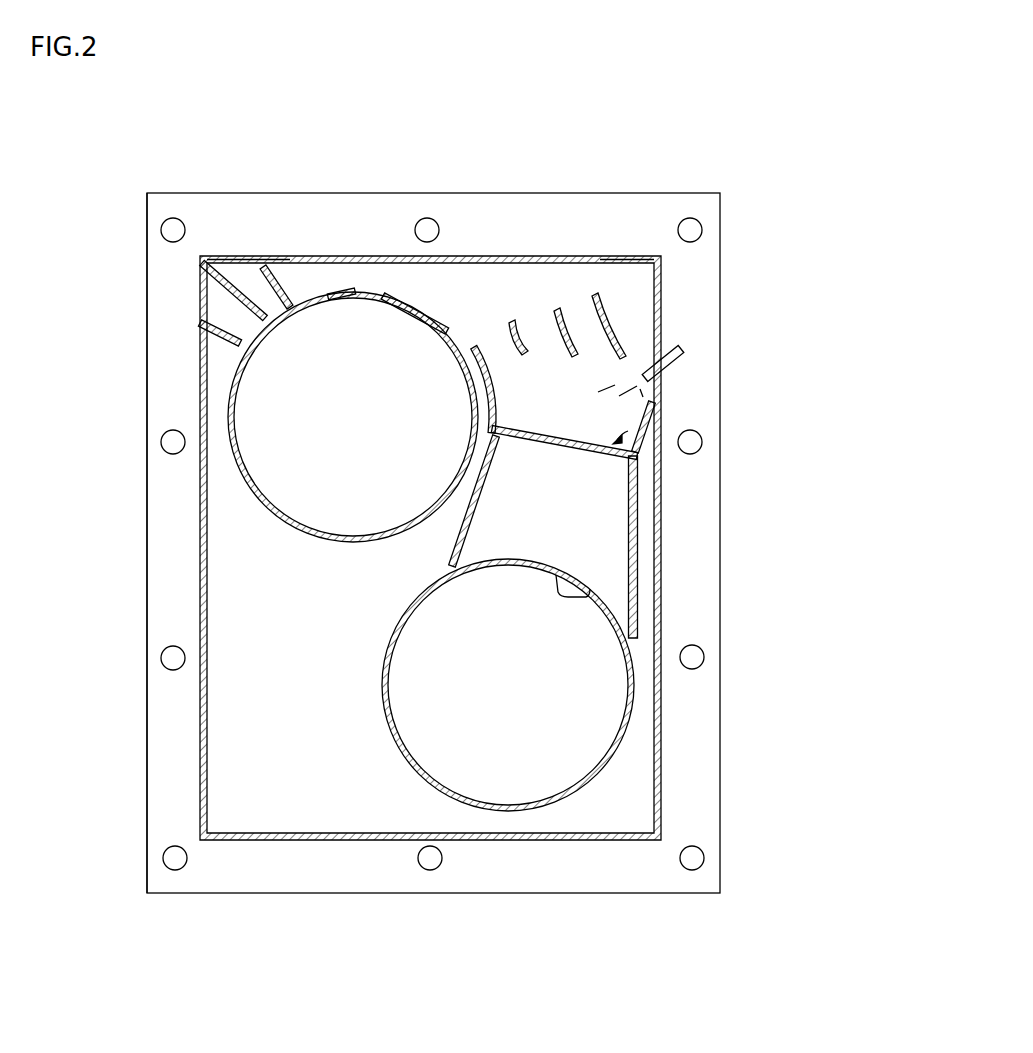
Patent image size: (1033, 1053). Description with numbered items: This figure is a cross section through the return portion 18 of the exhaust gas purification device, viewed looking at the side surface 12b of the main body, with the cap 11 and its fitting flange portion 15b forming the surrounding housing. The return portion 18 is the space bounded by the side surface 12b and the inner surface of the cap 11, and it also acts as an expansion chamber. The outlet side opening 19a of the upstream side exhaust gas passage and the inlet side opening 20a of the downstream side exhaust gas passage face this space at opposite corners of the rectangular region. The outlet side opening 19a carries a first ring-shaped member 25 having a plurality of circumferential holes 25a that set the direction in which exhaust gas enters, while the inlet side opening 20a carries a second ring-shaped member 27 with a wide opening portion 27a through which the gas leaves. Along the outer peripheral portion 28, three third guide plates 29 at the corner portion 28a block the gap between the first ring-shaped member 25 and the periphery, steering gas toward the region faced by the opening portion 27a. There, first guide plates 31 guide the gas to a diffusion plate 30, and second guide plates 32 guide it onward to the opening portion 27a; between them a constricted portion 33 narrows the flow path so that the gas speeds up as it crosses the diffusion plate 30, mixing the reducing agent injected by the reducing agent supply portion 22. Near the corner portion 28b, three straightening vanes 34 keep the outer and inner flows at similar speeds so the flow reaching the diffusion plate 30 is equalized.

The cap 11 is at (760, 229).
The side surface 12b is at (303, 755).
The fitting flange portion 15b is at (156, 585).
The return portion 18 is at (512, 272).
The outlet side opening 19a is at (323, 307).
The inlet side opening 20a is at (580, 597).
The reducing agent supply portion 22 is at (682, 352).
The first ring-shaped member 25 is at (228, 395).
The holes 25a is at (433, 317).
The second ring-shaped member 27 is at (635, 693).
The opening portion 27a is at (622, 637).
The outer peripheral portion 28 is at (202, 688).
The corner portion 28a is at (260, 273).
The corner portion 28b is at (642, 253).
The third guide plates 29 is at (208, 325).
The diffusion plate 30 is at (483, 477).
The first guide plates 31 is at (493, 410).
The second guide plates 32 is at (637, 530).
The constricted portion 33 is at (624, 439).
The straightening vanes 34 is at (525, 327).